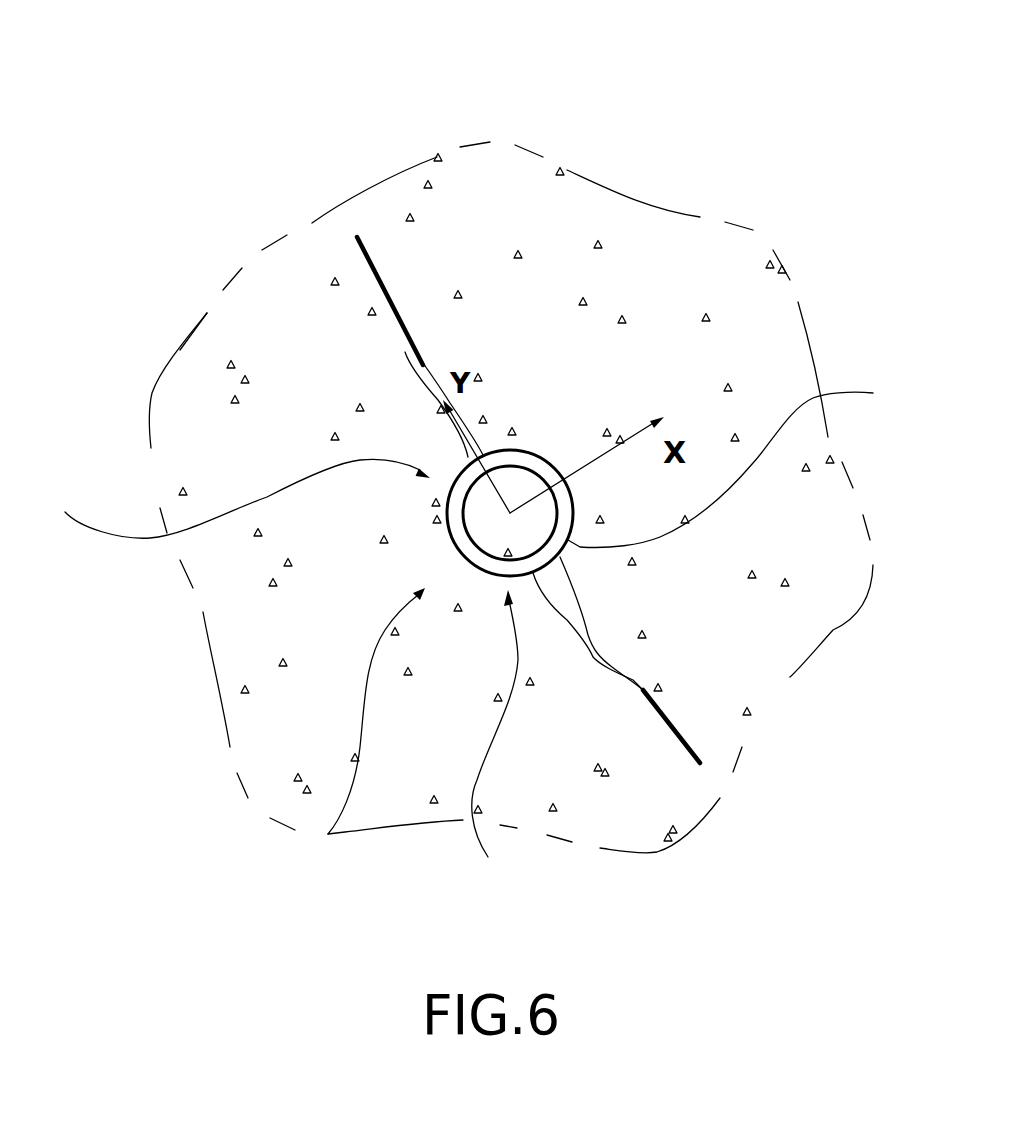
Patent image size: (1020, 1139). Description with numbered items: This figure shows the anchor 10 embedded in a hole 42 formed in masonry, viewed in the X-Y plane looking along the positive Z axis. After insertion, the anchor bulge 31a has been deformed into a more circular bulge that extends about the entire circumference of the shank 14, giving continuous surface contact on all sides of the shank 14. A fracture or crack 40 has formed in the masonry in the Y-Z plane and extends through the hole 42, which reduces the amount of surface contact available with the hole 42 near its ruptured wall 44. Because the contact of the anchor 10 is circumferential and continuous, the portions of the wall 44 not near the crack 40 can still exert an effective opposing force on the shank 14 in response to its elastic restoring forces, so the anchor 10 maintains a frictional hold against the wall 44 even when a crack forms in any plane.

The anchor 10 is at (328, 834).
The shank 14 is at (229, 498).
The anchor bulge 31a is at (515, 425).
The crack 40 is at (405, 352).
The hole 42 is at (495, 756).
The wall 44 is at (742, 461).